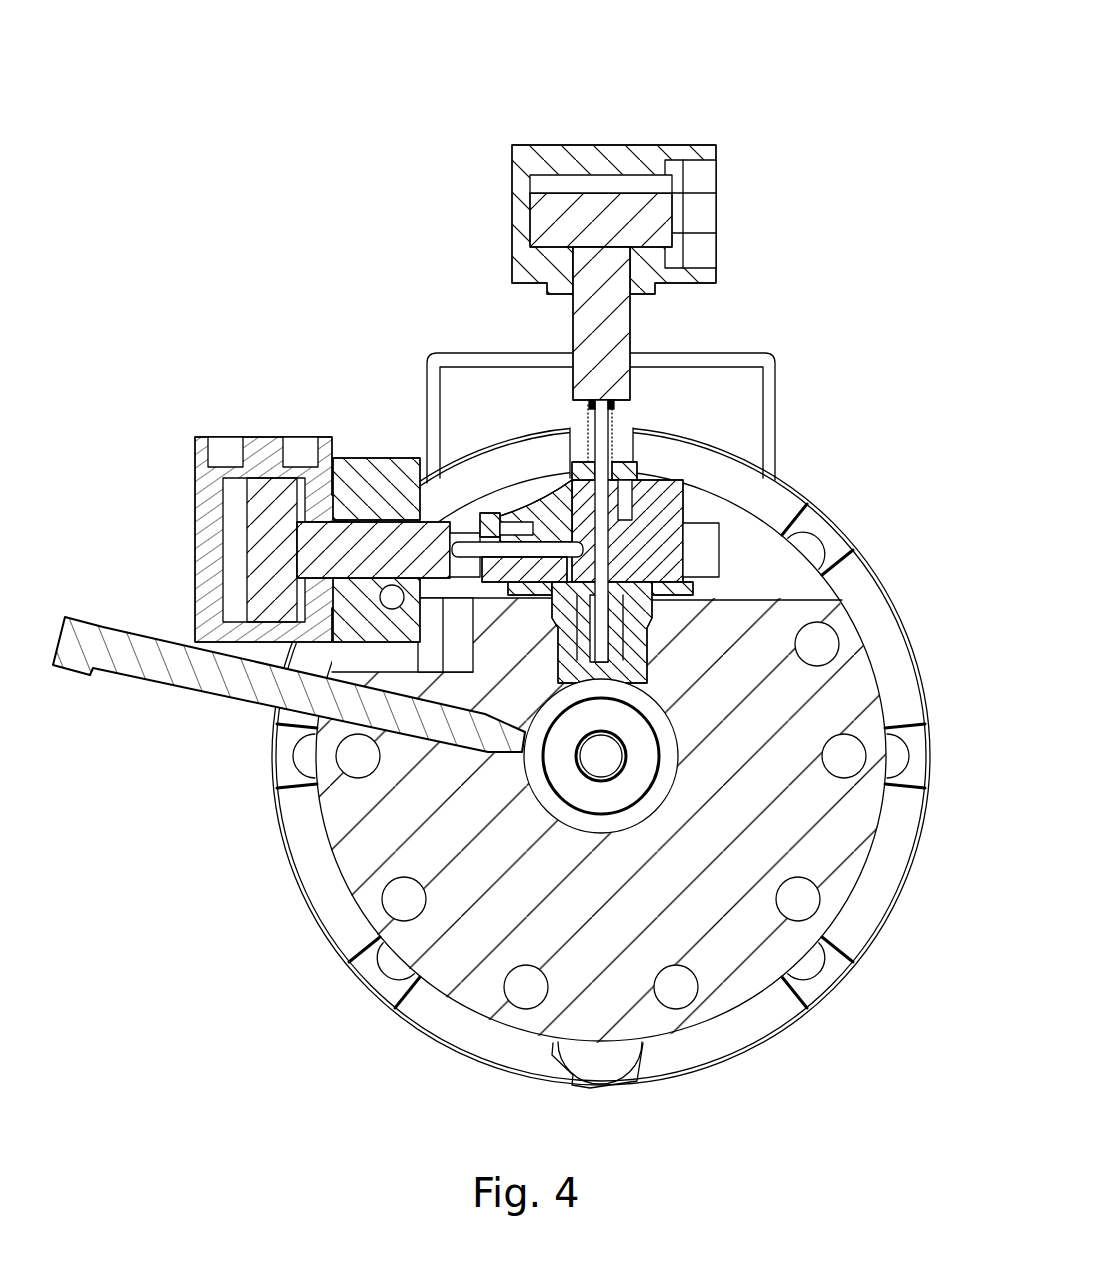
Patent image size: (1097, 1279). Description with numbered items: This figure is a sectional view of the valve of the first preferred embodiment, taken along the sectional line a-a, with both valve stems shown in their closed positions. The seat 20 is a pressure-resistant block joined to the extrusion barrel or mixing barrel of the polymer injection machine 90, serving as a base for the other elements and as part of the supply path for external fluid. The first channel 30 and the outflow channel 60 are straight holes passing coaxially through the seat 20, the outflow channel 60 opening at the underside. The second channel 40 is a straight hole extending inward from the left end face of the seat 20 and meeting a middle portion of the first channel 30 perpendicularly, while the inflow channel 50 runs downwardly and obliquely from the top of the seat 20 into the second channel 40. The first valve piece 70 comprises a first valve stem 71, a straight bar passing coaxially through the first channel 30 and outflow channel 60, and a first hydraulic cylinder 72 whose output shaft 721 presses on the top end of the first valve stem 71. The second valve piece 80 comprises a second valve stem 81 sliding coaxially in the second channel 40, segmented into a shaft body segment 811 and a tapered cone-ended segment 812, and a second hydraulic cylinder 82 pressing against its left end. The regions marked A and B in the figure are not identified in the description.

The seat 20 is at (697, 527).
The first channel 30 is at (700, 605).
The second channel 40 is at (527, 478).
The inflow channel 50 is at (572, 490).
The outflow channel 60 is at (632, 681).
The first valve piece 70 is at (716, 130).
The first valve stem 71 is at (690, 548).
The first hydraulic cylinder 72 is at (593, 152).
The output shaft 721 is at (615, 327).
The second valve piece 80 is at (212, 420).
The second valve stem 81 is at (450, 728).
The shaft body segment 811 is at (473, 537).
The cone-ended segment 812 is at (520, 732).
The second hydraulic cylinder 82 is at (207, 540).
The polymer injection machine 90 is at (445, 975).
The upper chamber A is at (633, 478).
The lower chamber B is at (643, 660).